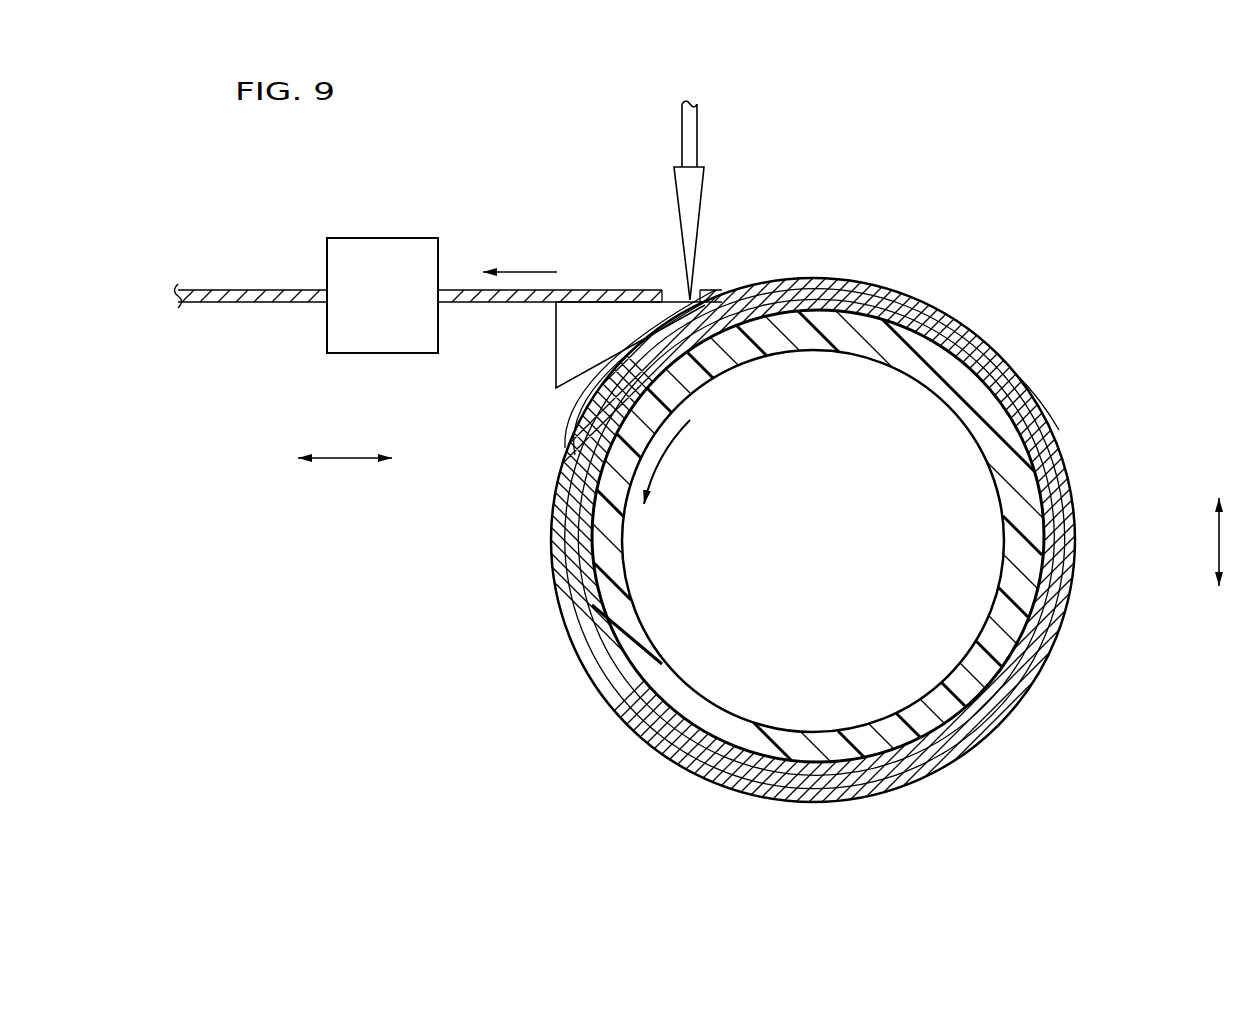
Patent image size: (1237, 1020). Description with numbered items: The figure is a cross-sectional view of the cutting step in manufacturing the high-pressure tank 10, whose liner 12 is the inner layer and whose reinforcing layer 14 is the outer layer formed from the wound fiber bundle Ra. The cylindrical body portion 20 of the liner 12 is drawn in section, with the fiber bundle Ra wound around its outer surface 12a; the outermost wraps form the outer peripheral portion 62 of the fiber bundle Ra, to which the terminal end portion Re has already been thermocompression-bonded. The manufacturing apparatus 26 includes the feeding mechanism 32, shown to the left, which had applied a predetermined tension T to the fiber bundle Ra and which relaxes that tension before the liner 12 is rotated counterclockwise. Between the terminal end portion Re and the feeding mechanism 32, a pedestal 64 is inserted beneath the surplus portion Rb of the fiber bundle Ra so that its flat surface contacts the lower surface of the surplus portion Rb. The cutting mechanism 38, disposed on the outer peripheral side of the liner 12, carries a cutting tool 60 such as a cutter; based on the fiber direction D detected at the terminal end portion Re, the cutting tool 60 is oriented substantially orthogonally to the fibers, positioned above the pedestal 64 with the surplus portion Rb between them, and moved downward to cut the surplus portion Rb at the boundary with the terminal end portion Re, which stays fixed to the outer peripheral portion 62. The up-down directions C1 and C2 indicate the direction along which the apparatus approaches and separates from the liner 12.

The high-pressure tank 10 is at (1043, 357).
The liner 12 is at (613, 580).
The body portion 20 is at (818, 536).
The outer surface 12a is at (593, 618).
The reinforcing layer 14 is at (1050, 650).
The manufacturing apparatus 26 is at (488, 146).
The feeding mechanism 32 is at (377, 248).
The cutting mechanism 38 is at (707, 200).
The cutting tool 60 is at (678, 193).
The outer peripheral portion 62 is at (560, 478).
The pedestal 64 is at (565, 364).
The fiber bundle Ra is at (1043, 418).
The surplus portion Rb is at (483, 303).
The terminal end portion Re is at (728, 282).
The tension T is at (520, 256).
The fiber direction D is at (345, 441).
The up-down direction arrow C1 is at (1219, 559).
The up-down direction arrow C2 is at (1219, 544).